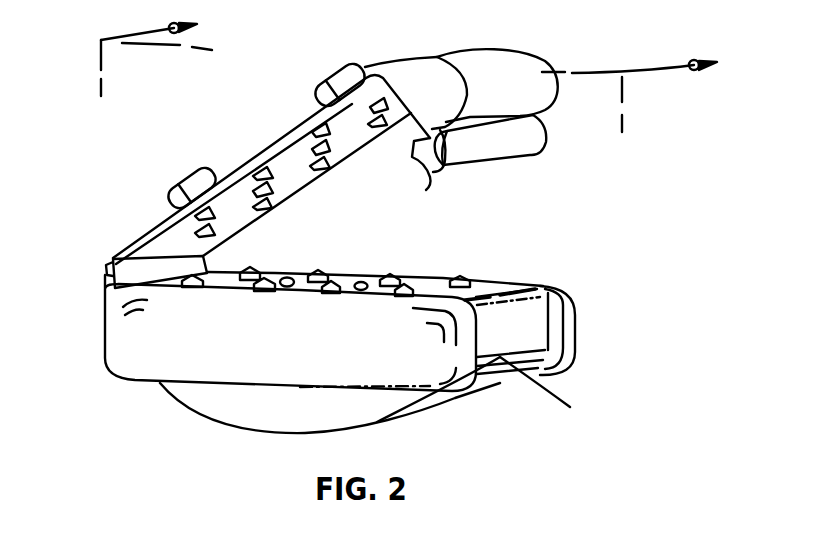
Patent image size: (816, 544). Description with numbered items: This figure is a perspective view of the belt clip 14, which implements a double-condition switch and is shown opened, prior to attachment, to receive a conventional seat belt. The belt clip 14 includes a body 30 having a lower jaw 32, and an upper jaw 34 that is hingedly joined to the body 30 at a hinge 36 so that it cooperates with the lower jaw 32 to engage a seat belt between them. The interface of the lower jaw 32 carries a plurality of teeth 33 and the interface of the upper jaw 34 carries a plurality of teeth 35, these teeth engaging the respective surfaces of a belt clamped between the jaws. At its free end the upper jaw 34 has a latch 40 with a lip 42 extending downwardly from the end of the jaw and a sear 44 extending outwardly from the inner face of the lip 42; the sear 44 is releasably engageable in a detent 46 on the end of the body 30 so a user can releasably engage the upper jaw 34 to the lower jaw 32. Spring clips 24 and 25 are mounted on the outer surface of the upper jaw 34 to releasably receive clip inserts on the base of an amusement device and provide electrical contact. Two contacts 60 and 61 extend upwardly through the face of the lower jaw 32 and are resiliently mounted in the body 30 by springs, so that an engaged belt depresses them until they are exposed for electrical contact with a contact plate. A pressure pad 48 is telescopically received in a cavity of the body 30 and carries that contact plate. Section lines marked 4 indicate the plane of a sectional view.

The section line 4- 4 is at (409, 77).
The belt clip 14 is at (626, 277).
The spring clip 24 is at (187, 182).
The spring clip 25 is at (331, 80).
The body 30 is at (147, 352).
The lower jaw 32 is at (503, 285).
The teeth 33 is at (462, 280).
The upper jaw 34 is at (267, 147).
The teeth 35 is at (317, 165).
The hinge 36 is at (106, 274).
The latch 40 is at (522, 62).
The lip 42 is at (437, 88).
The sear 44 is at (428, 170).
The detent 46 is at (570, 407).
The pressure pad 48 is at (260, 407).
The contact 60 is at (295, 274).
The contact 61 is at (363, 283).